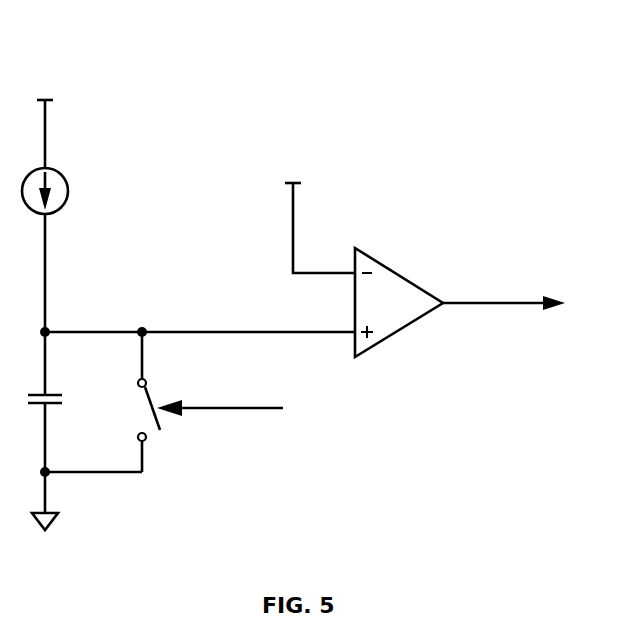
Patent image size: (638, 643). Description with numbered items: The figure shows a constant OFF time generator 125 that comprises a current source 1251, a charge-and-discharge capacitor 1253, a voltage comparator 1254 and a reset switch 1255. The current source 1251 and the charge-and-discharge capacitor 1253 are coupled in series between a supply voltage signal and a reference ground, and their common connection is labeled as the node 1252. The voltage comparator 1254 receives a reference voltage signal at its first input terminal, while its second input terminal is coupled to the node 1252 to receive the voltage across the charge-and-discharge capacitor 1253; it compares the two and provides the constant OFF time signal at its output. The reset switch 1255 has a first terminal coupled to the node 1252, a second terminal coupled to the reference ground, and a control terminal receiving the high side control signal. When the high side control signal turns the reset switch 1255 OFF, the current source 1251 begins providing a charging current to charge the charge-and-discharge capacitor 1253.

The constant OFF time generator 125 is at (214, 75).
The current source 1251 is at (80, 160).
The node 1252 is at (50, 330).
The charge-and-discharge capacitor 1253 is at (62, 412).
The voltage comparator 1254 is at (388, 268).
The reset switch 1255 is at (152, 404).